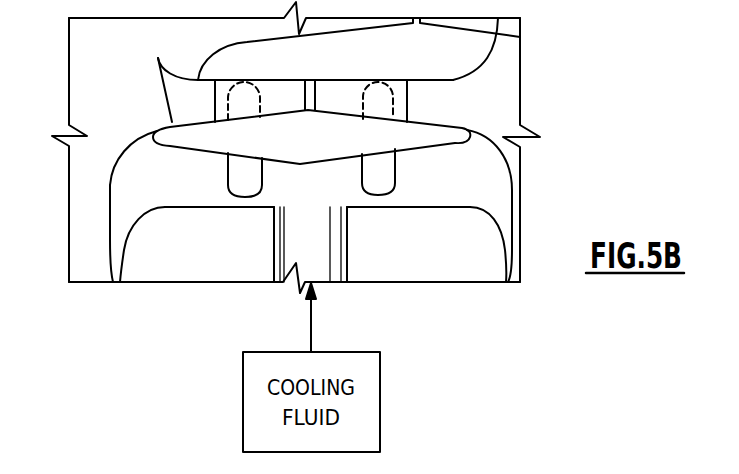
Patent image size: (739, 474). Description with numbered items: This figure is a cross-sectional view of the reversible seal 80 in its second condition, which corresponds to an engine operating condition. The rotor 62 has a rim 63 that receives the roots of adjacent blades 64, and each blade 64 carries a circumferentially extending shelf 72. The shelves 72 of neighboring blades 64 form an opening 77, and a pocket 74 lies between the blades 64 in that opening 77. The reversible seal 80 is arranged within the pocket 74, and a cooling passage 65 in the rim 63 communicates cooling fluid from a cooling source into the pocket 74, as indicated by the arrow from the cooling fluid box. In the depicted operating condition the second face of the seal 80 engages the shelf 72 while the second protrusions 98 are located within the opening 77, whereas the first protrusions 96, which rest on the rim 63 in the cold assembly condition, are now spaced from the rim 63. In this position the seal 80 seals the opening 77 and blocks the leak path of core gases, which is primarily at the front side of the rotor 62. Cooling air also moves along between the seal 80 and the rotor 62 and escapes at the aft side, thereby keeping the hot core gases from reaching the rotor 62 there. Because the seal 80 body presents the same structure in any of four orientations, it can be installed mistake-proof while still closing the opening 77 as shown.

The rotor 62 is at (138, 260).
The rim 63 is at (433, 207).
The blade 64 is at (80, 105).
The cooling passage 65 is at (347, 250).
The shelf 72 is at (205, 100).
The pocket 74 is at (123, 197).
The opening 77 is at (276, 80).
The reversible seal 80 is at (476, 115).
The first protrusions 96 is at (244, 175).
The second protrusions 98 is at (248, 106).